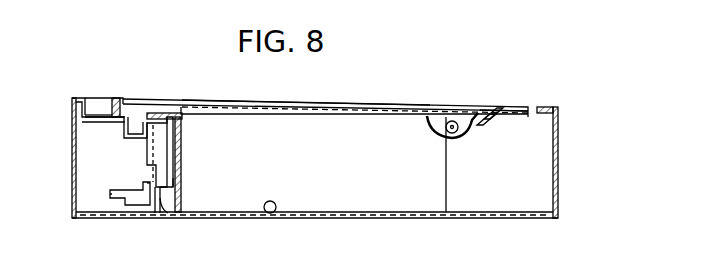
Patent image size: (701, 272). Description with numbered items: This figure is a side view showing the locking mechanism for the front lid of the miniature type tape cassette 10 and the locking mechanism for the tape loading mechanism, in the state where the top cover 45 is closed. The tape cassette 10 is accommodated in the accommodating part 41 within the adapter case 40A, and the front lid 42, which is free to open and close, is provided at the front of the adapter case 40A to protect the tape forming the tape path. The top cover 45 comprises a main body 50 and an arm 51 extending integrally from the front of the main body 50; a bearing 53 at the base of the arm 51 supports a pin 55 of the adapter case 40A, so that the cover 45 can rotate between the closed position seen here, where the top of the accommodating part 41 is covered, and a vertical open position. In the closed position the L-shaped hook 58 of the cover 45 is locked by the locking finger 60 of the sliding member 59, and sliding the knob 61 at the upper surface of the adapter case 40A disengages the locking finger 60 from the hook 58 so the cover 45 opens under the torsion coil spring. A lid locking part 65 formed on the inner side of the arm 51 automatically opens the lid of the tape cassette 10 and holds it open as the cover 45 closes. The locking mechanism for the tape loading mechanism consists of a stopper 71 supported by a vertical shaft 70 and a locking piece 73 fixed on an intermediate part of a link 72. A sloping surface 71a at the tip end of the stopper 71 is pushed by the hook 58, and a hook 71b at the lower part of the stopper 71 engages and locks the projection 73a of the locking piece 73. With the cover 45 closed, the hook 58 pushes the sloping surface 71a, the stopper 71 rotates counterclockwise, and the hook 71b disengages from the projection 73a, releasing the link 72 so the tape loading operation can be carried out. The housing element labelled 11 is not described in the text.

The tape cassette 10 is at (446, 196).
The housing 11 is at (417, 210).
The adapter case 40A is at (97, 97).
The accommodating part 41 is at (272, 215).
The front lid 42 is at (558, 157).
The top cover 45 is at (304, 100).
The main body 50 is at (241, 99).
The right arm 51 is at (508, 107).
The bearing 53 is at (462, 133).
The pin 55 is at (448, 131).
The L-shaped hook 58 is at (135, 138).
The sliding member 59 is at (94, 125).
The locking finger 60 is at (123, 122).
The sliding knob 61 is at (93, 102).
The lid locking part 65 is at (490, 123).
The vertical shaft 70 is at (166, 206).
The stopper 71 is at (167, 148).
The sloping surface 71a is at (147, 113).
The hook 71b is at (175, 182).
The link 72 is at (135, 204).
The locking piece 73 is at (110, 195).
The projection 73a is at (147, 184).